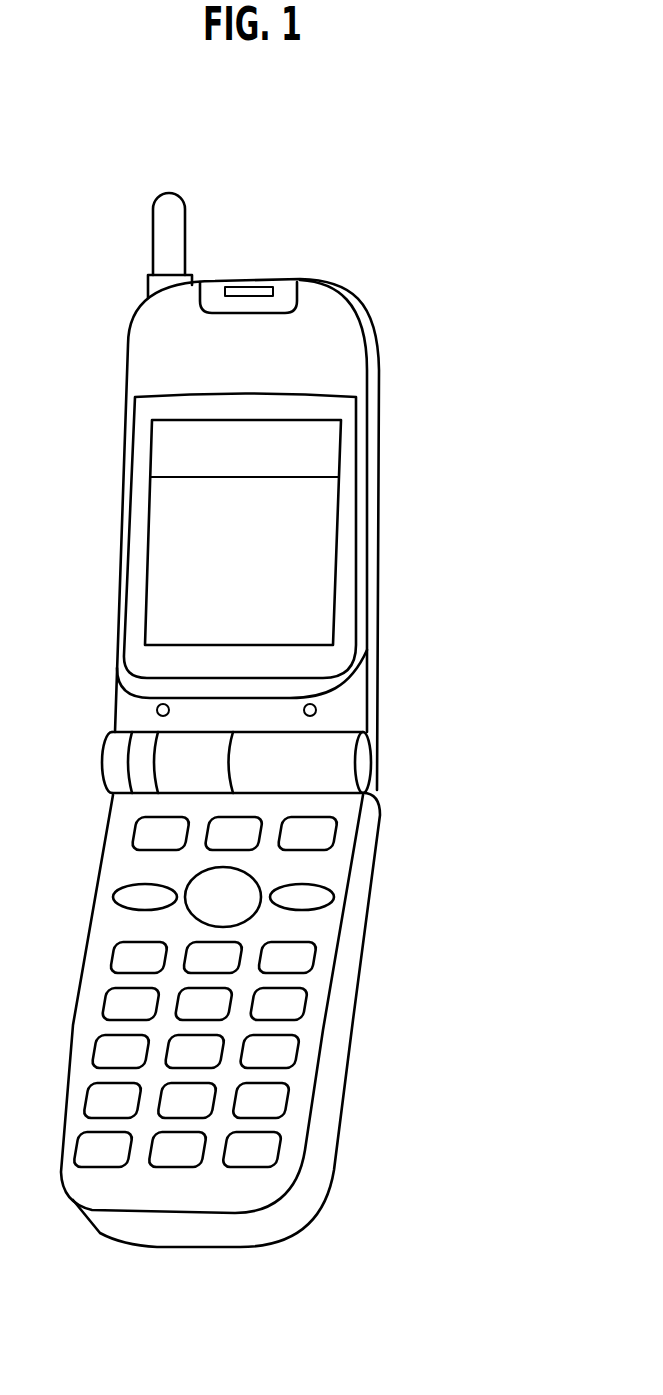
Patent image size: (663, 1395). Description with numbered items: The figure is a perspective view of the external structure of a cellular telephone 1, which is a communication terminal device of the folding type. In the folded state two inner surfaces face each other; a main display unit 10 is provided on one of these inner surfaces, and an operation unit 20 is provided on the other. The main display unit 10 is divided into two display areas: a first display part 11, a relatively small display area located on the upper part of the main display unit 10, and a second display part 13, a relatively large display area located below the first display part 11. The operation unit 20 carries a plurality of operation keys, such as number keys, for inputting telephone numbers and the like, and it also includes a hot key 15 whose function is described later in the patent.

The cellular telephone 1 is at (416, 307).
The main display unit 10 is at (332, 517).
The first display part 11 is at (325, 447).
The second display part 13 is at (325, 562).
The hot key 15 is at (253, 833).
The operation unit 20 is at (365, 938).